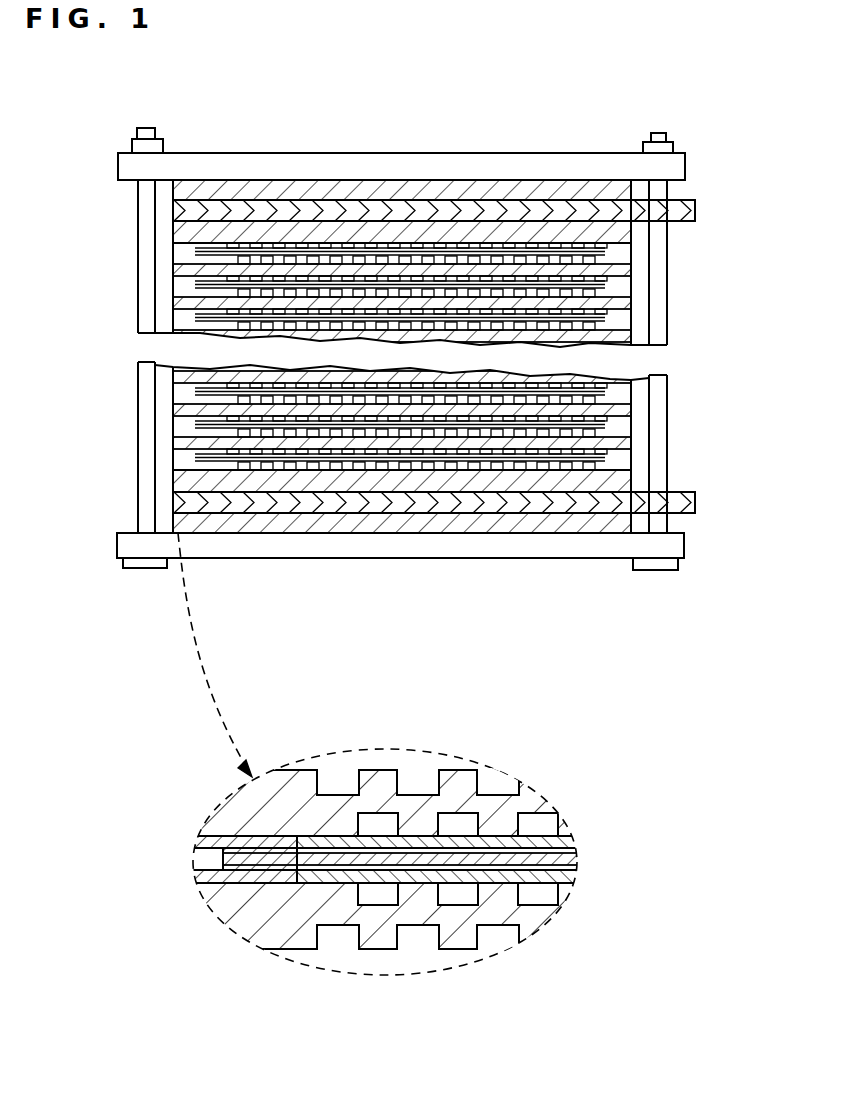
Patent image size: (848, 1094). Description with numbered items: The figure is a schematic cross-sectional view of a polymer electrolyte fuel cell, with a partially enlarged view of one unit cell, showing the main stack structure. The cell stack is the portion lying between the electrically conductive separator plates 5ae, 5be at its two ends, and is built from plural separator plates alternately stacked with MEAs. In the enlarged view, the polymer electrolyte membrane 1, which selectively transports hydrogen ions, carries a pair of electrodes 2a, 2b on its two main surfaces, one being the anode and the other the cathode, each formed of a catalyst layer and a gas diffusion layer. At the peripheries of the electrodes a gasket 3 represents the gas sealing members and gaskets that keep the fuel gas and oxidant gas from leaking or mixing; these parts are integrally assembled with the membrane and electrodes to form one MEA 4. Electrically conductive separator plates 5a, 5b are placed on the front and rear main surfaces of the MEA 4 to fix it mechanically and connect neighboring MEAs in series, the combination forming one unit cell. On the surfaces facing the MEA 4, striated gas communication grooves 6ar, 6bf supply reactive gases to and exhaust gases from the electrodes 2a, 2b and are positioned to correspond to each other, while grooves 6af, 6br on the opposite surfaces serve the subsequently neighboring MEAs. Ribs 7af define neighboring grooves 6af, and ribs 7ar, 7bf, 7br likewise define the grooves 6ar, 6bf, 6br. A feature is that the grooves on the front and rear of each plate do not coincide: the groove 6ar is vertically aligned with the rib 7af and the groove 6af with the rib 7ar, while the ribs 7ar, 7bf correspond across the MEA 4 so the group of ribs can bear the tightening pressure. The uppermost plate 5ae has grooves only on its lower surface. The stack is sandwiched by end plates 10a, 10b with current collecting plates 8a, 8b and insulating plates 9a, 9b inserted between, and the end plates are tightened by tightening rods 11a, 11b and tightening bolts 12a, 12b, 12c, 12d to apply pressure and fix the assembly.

The polymer electrolyte membrane 1 is at (196, 850).
The electrode 2a is at (193, 838).
The electrode 2b is at (196, 876).
The gasket 3 is at (200, 862).
The MEA 4 is at (175, 424).
The electrically conductive separator plate 5a is at (175, 405).
The electrically conductive separator plate 5b is at (175, 442).
The electrically conductive separator plate 5ae is at (620, 232).
The electrically conductive separator plate 5be is at (625, 481).
The gas communication groove 6af is at (418, 782).
The gas communication groove 6ar is at (462, 828).
The rib 7af is at (462, 788).
The rib 7ar is at (418, 822).
The gas communication groove 6bf is at (462, 893).
The gas communication groove 6br is at (422, 938).
The rib 7bf is at (410, 893).
The rib 7br is at (458, 938).
The current collecting plate 8a is at (690, 212).
The current collecting plate 8b is at (690, 503).
The insulating plate 9a is at (612, 192).
The insulating plate 9b is at (618, 522).
The end plate 10a is at (672, 170).
The end plate 10b is at (672, 548).
The tightening rod 11a is at (147, 128).
The tightening rod 11b is at (658, 133).
The tightening bolt 12a is at (134, 147).
The tightening bolt 12b is at (140, 562).
The tightening bolt 12c is at (668, 148).
The tightening bolt 12d is at (655, 570).